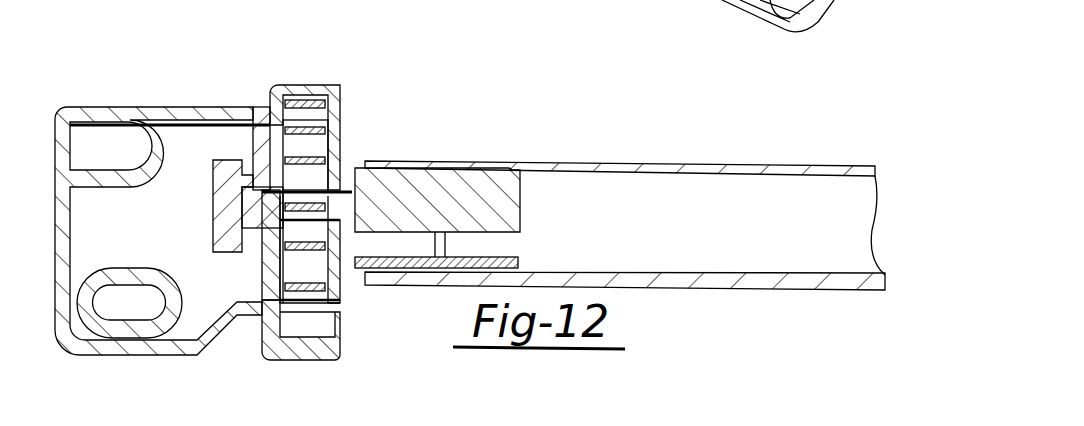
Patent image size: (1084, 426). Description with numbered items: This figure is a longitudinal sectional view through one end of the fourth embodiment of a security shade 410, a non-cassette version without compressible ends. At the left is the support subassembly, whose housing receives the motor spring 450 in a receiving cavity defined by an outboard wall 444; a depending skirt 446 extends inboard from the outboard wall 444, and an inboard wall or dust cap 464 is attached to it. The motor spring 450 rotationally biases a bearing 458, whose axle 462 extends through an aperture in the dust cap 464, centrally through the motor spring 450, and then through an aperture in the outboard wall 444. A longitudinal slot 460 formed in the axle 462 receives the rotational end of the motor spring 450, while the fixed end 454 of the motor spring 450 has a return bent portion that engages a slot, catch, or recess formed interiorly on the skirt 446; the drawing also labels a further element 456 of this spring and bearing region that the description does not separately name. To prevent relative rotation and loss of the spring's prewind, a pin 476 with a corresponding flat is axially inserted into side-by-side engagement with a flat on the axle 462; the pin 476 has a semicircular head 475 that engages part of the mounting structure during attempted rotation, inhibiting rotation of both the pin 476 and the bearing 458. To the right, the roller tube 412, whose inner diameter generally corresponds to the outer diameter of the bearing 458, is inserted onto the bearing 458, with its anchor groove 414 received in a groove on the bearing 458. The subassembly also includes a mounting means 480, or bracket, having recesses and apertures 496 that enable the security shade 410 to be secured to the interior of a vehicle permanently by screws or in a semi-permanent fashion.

The security shade 410 is at (477, 132).
The roller tube 412 is at (670, 292).
The anchor groove 414 is at (653, 163).
The outboard wall 444 is at (257, 287).
The depending skirt 446 is at (307, 305).
The motor spring 450 is at (300, 238).
The fixed end of the motor spring 454 is at (303, 100).
The inner frame 456 is at (330, 157).
The bearing 458 is at (480, 197).
The longitudinal slot 460 is at (330, 300).
The axle 462 is at (347, 205).
The dust cap 464 is at (343, 128).
The semicircular head 475 is at (227, 160).
The pin 476 is at (260, 175).
The mounting means 480 is at (163, 107).
The recesses and apertures 496 is at (100, 150).